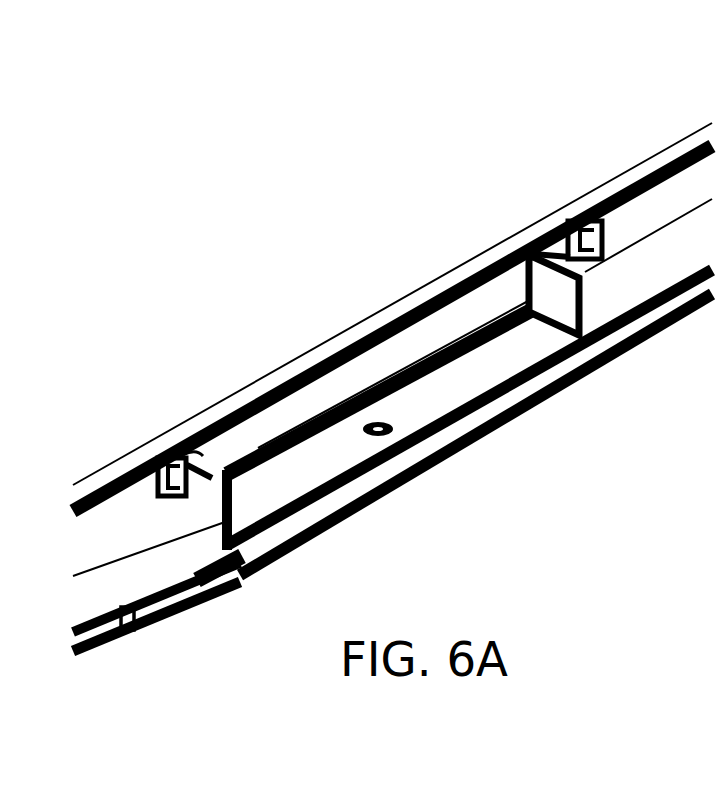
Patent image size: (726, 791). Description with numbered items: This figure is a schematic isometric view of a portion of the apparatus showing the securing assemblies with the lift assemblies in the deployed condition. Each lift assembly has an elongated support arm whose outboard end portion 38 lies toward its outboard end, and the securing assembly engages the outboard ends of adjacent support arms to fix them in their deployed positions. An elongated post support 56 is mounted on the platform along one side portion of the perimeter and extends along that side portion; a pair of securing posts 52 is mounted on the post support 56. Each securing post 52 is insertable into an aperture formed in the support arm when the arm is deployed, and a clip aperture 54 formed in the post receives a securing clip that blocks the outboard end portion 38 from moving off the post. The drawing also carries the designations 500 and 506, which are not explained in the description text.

The outboard end portion 38 is at (633, 233).
The securing post 52 is at (556, 238).
The clip aperture 54 is at (195, 462).
The post support 56 is at (337, 460).
The rail assembly 500 is at (627, 368).
The rail segment 506 is at (232, 610).